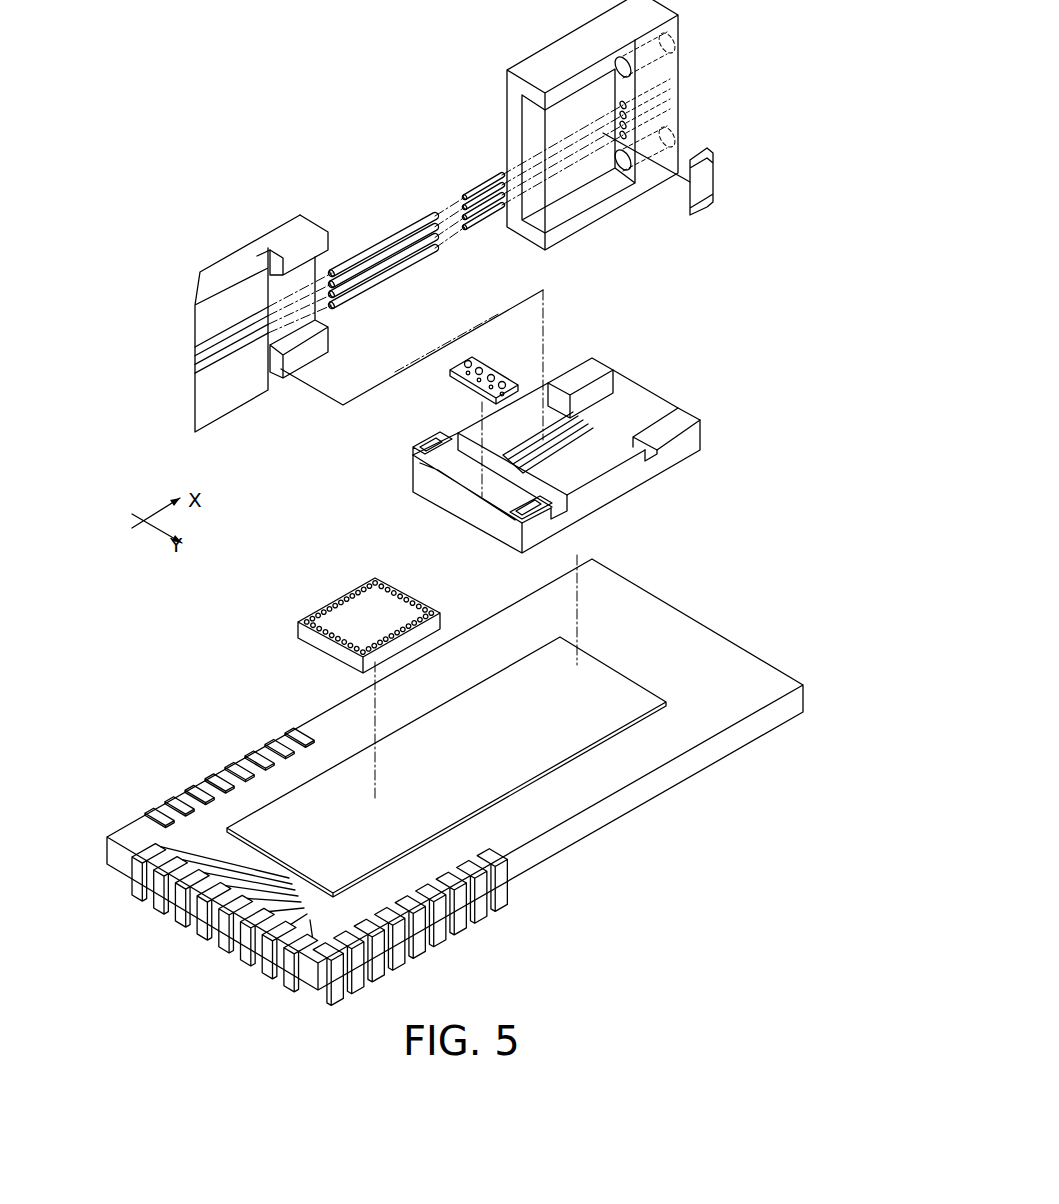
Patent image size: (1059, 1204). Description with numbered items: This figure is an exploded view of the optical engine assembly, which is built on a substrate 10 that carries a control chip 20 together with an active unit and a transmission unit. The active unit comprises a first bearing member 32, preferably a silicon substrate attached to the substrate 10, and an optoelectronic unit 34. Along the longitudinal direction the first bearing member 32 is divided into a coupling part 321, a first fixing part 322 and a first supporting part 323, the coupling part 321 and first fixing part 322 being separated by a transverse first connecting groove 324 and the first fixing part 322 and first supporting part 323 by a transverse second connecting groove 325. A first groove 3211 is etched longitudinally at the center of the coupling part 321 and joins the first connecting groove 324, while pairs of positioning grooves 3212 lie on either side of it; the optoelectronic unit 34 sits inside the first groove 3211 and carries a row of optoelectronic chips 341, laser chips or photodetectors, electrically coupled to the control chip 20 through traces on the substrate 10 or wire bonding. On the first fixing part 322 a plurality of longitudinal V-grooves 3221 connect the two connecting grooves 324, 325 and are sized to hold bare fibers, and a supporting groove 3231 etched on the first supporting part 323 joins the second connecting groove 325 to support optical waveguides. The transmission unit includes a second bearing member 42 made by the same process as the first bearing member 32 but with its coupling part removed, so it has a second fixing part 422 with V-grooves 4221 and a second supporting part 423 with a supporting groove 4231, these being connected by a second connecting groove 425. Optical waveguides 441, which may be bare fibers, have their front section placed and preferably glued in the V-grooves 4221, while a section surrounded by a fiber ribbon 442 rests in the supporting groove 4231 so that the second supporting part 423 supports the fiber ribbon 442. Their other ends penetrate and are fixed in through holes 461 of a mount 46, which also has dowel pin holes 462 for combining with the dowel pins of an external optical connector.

The substrate 10 is at (380, 935).
The control chip 20 is at (320, 618).
The first bearing member 32 is at (556, 461).
The coupling part 321 is at (456, 508).
The first groove 3211 is at (458, 492).
The positioning grooves 3212 is at (536, 536).
The first fixing part 322 is at (581, 435).
The V-grooves 3221 is at (612, 386).
The supporting groove 3231 is at (642, 408).
The first supporting part 323 is at (688, 444).
The first connecting groove 324 is at (568, 513).
The second connecting groove 325 is at (649, 461).
The optoelectronic unit 34 is at (453, 394).
The optoelectronic chips 341 is at (458, 382).
The second bearing member 42 is at (269, 298).
The second fixing part 422 is at (218, 316).
The V-grooves 4221 is at (221, 346).
The second supporting part 423 is at (268, 220).
The second connecting groove 425 is at (239, 223).
The supporting groove 4231 is at (320, 317).
The optical waveguides 441 is at (387, 236).
The fiber ribbon 442 is at (488, 183).
The mount 46 is at (630, 125).
The through holes 461 is at (674, 132).
The dowel pin holes 462 is at (676, 41).